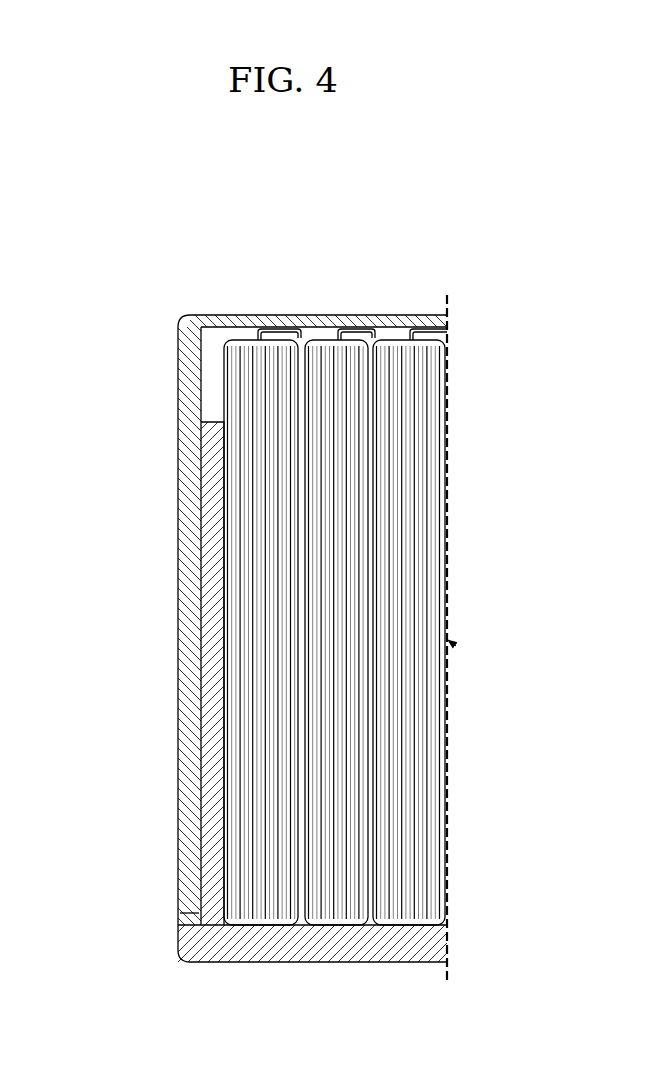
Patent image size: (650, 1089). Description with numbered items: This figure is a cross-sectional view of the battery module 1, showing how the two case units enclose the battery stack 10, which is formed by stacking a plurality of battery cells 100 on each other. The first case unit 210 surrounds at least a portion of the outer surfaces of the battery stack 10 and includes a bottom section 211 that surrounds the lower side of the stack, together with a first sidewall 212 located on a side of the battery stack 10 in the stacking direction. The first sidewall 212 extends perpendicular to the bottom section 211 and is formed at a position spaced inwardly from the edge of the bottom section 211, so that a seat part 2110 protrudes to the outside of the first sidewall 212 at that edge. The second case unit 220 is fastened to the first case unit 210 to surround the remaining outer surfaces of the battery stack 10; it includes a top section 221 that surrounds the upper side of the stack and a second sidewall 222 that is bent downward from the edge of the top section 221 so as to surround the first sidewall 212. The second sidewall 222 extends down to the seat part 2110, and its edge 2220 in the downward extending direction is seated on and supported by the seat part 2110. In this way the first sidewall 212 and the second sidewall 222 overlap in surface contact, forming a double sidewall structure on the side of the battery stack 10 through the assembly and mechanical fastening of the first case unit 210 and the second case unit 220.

The battery module 1 is at (30, 196).
The battery stack 10 is at (386, 611).
The battery cell 100 is at (437, 386).
The first case unit 210 is at (267, 745).
The bottom section 211 is at (267, 950).
The seat part 2110 is at (182, 943).
The first sidewall 212 is at (196, 793).
The second case unit 220 is at (274, 568).
The top section 221 is at (356, 318).
The second sidewall 222 is at (195, 504).
The edge of second sidewall 2220 is at (188, 912).